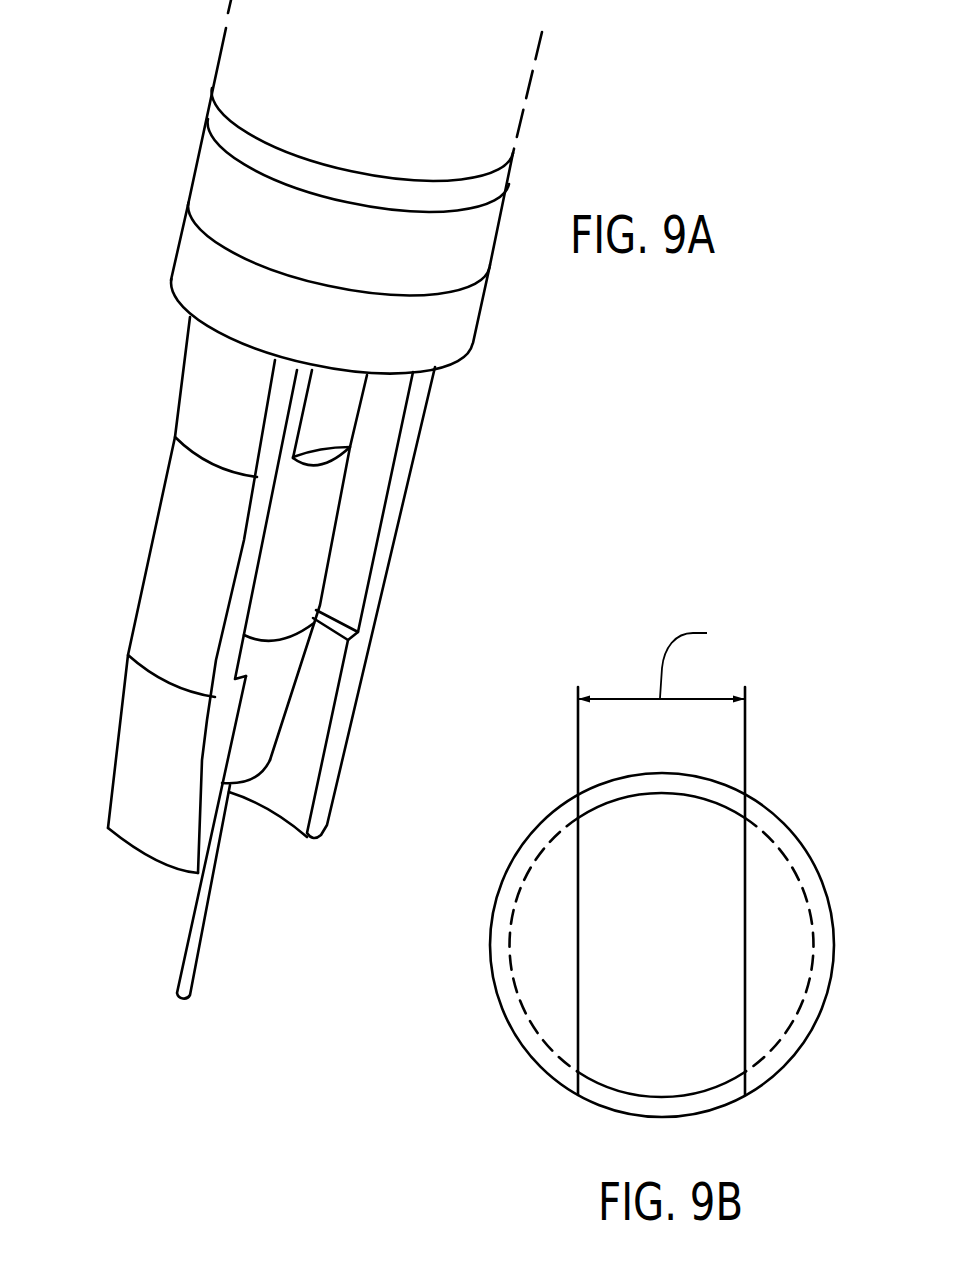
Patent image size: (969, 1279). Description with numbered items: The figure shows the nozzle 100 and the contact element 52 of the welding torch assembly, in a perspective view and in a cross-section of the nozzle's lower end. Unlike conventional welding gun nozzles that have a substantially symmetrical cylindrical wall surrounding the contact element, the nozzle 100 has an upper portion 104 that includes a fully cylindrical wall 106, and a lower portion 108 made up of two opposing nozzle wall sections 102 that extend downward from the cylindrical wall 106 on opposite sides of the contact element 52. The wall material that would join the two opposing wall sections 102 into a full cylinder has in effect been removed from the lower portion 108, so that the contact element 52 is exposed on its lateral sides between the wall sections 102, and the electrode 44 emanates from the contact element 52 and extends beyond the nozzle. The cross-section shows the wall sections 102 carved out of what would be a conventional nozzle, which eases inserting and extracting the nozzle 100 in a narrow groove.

In FIG. 9A, the nozzle 100 is at (86, 356).
In FIG. 9B, the nozzle 100 is at (862, 846).
In FIG. 9A, the opposing nozzle wall sections 102 is at (138, 763).
In FIG. 9B, the opposing nozzle wall sections 102 is at (630, 774).
In FIG. 9A, the upper portion 104 is at (532, 297).
In FIG. 9A, the cylindrical wall 106 is at (448, 347).
In FIG. 9A, the lower portion 108 is at (98, 585).
In FIG. 9A, the contact element 52 is at (262, 695).
In FIG. 9A, the electrode 44 is at (190, 938).